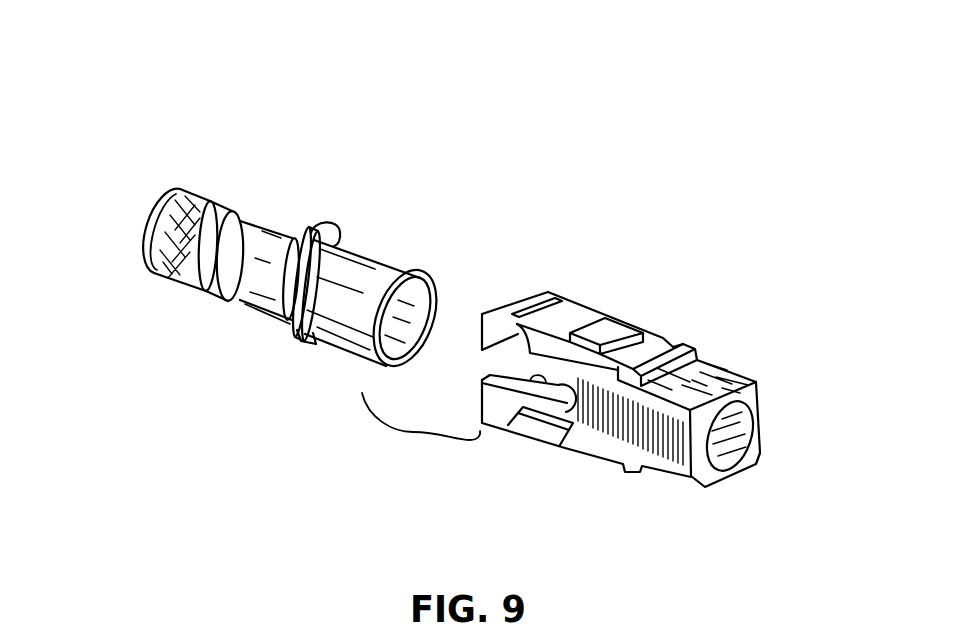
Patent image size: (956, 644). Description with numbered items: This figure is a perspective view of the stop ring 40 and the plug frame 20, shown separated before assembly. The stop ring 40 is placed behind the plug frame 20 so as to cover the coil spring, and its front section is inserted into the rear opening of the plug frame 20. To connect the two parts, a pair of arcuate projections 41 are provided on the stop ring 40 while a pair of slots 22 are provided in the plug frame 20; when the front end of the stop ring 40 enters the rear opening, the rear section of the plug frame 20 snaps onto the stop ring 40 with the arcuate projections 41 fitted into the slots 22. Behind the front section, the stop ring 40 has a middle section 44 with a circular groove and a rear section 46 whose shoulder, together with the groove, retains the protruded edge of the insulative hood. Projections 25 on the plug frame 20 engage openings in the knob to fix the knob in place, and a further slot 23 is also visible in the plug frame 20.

The plug frame 20 is at (708, 338).
The slots 22 is at (541, 299).
The bottom slot 23 is at (566, 427).
The projections 25 is at (612, 330).
The stop ring 40 is at (226, 146).
The arcuate projections 41 is at (336, 226).
The middle section 44 is at (248, 224).
The rear section 46 is at (208, 302).